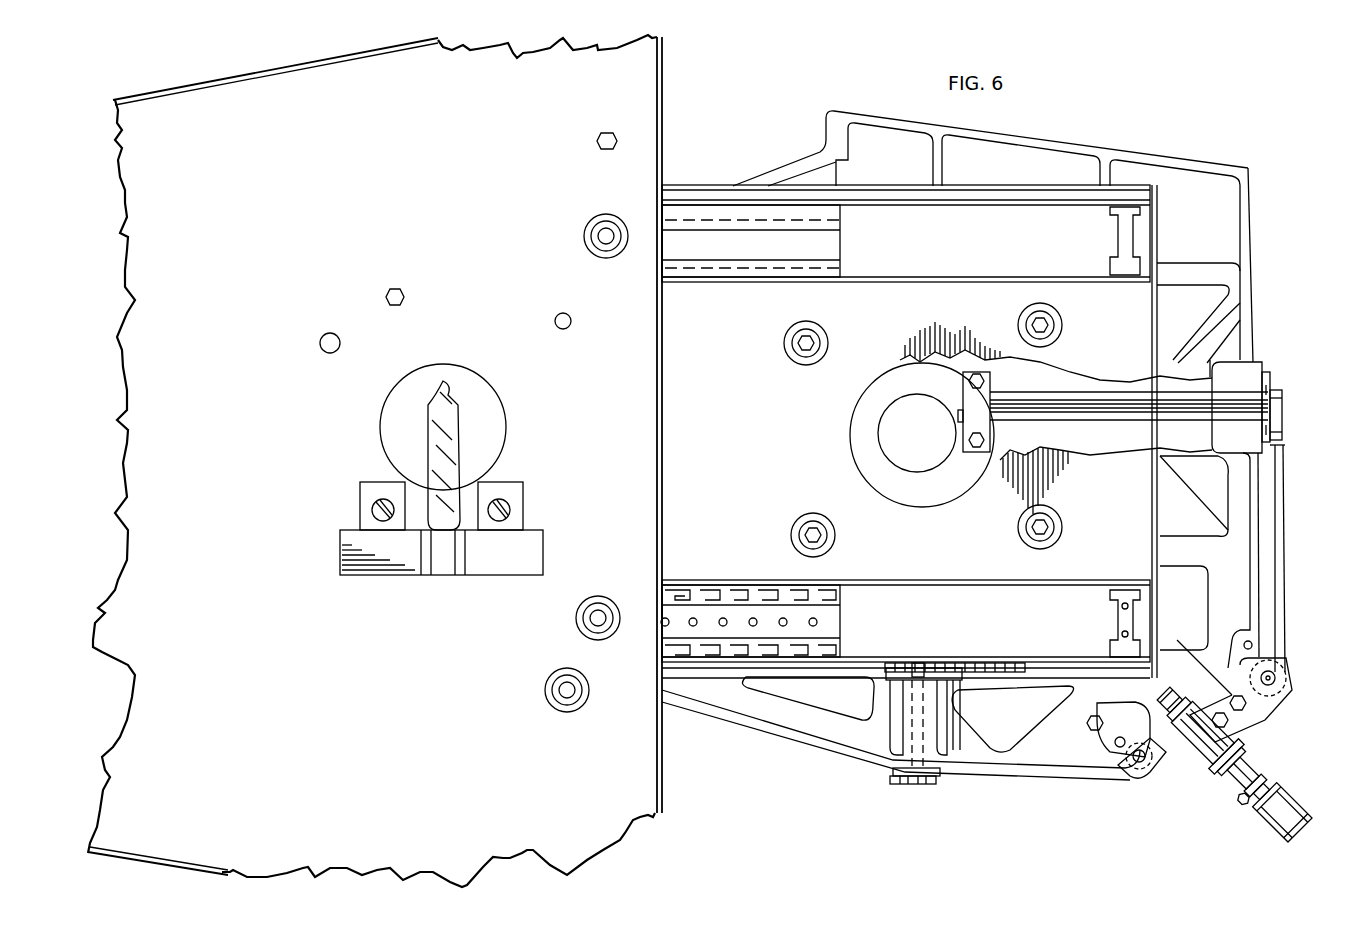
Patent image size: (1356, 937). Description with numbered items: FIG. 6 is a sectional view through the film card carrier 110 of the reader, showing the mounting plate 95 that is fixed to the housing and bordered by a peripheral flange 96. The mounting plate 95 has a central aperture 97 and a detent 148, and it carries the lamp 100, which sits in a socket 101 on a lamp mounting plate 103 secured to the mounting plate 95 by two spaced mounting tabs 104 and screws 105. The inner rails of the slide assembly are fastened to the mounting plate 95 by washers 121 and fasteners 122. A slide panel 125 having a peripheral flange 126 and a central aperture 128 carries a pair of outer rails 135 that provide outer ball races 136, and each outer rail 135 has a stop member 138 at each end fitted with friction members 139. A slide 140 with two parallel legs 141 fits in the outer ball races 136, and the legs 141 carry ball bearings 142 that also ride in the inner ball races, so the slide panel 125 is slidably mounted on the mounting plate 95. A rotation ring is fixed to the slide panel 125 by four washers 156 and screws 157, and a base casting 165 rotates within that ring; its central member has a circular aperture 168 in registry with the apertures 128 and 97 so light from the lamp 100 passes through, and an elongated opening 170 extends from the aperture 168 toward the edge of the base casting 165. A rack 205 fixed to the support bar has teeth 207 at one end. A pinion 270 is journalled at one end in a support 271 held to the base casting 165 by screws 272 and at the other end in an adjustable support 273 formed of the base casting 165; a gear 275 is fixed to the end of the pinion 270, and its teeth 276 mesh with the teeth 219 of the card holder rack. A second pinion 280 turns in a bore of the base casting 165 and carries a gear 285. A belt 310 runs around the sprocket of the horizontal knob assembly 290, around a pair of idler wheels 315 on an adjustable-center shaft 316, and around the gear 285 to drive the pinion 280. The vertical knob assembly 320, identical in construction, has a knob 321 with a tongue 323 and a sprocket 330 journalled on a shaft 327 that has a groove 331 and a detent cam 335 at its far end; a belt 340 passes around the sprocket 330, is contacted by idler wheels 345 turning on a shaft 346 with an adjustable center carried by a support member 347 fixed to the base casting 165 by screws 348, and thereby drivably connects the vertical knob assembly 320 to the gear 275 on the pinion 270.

The mounting plate 95 is at (148, 193).
The peripheral flange 96 is at (288, 72).
The central aperture 97 is at (498, 420).
The lamp 100 is at (430, 442).
The socket 101 is at (426, 575).
The lamp mounting plate 103 is at (340, 562).
The mounting tabs 104 is at (510, 508).
The screws 105 is at (372, 510).
The film card carrier 110 is at (1278, 232).
The washers 121 is at (611, 221).
The fasteners 122 is at (603, 220).
The slide panel 125 is at (1185, 508).
The peripheral flange 126 is at (1152, 545).
The central aperture 128 is at (898, 435).
The outer rails 135 is at (906, 247).
The outer ball races 136 is at (1060, 658).
The stop member 138 is at (1118, 624).
The friction members 139 is at (1125, 241).
The slide 140 is at (832, 242).
The legs 141 is at (842, 592).
The ball bearings 142 is at (708, 590).
The detent 148 is at (400, 293).
The washers 156 is at (1061, 322).
The screws 157 is at (806, 343).
The base casting 165 is at (1225, 232).
The circular aperture 168 is at (890, 470).
The elongated opening 170 is at (1090, 394).
The rack 205 is at (990, 660).
The teeth 207 is at (955, 664).
The teeth 219 is at (1250, 362).
The pinion 270 is at (1098, 430).
The support 271 is at (990, 450).
The screws 272 is at (977, 450).
The adjustable support 273 is at (1270, 380).
The gear 275 is at (1284, 390).
The teeth 276 is at (1140, 425).
The pinion 280 is at (905, 680).
The gear 285 is at (912, 786).
The horizontal knob assembly 290 is at (1300, 822).
The belt 310 is at (1032, 782).
The idler wheels 315 is at (1142, 770).
The shaft 316 is at (1125, 770).
The vertical knob assembly 320 is at (1282, 812).
The knob 321 is at (1269, 799).
The tongue 323 is at (1258, 788).
The shaft 327 is at (1243, 773).
The sprocket 330 is at (1207, 737).
The groove 331 is at (1244, 799).
The detent cam 335 is at (1172, 702).
The belt 340 is at (1290, 580).
The idler wheels 345 is at (1276, 675).
The shaft 346 is at (1276, 690).
The support member 347 is at (1112, 716).
The screws 348 is at (1080, 718).